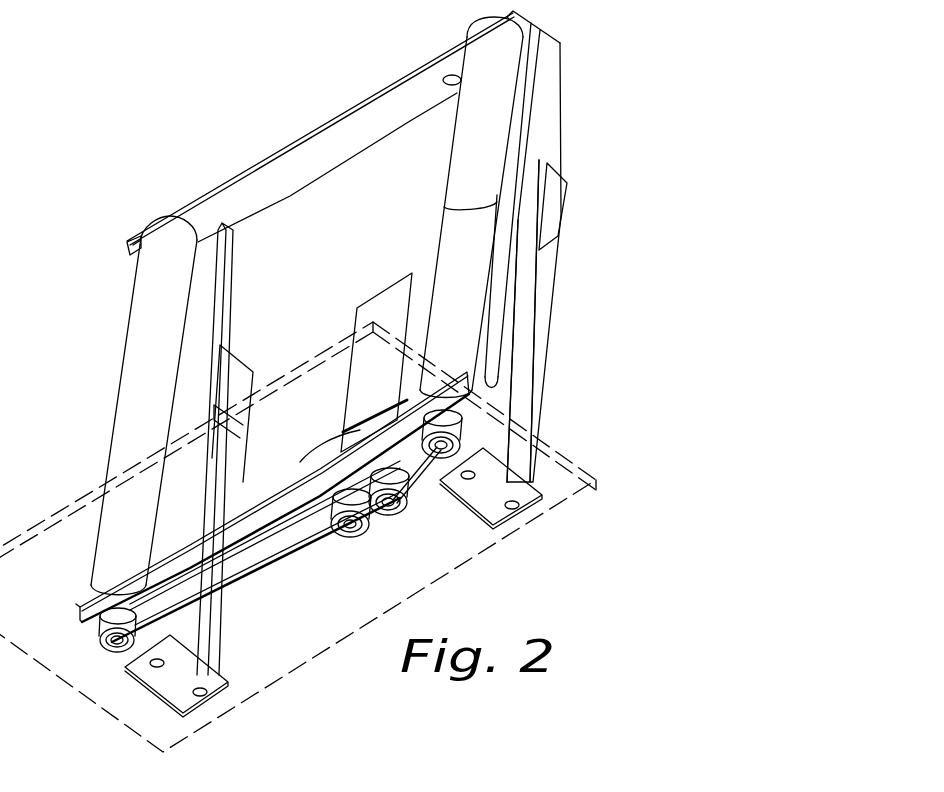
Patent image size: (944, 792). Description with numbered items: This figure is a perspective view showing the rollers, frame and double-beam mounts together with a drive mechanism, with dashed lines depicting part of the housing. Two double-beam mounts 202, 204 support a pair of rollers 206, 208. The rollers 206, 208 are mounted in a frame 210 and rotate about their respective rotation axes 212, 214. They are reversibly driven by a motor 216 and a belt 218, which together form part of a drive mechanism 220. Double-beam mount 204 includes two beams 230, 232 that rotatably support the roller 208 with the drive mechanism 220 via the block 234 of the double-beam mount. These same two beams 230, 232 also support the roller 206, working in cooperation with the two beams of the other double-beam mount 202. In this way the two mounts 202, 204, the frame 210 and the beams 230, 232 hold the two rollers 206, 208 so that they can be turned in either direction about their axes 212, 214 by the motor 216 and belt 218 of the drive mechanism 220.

The double-beam mount 202 is at (223, 622).
The double-beam mount 204 is at (562, 243).
The roller 206 is at (140, 322).
The roller 208 is at (464, 171).
The frame 210 is at (548, 96).
The rotation axis 212 is at (116, 645).
The rotation axis 214 is at (438, 459).
The motor 216 is at (350, 440).
The belt 218 is at (268, 548).
The drive mechanism 220 is at (392, 522).
The beam 230 is at (547, 341).
The beam 232 is at (535, 433).
The block 234 is at (559, 205).